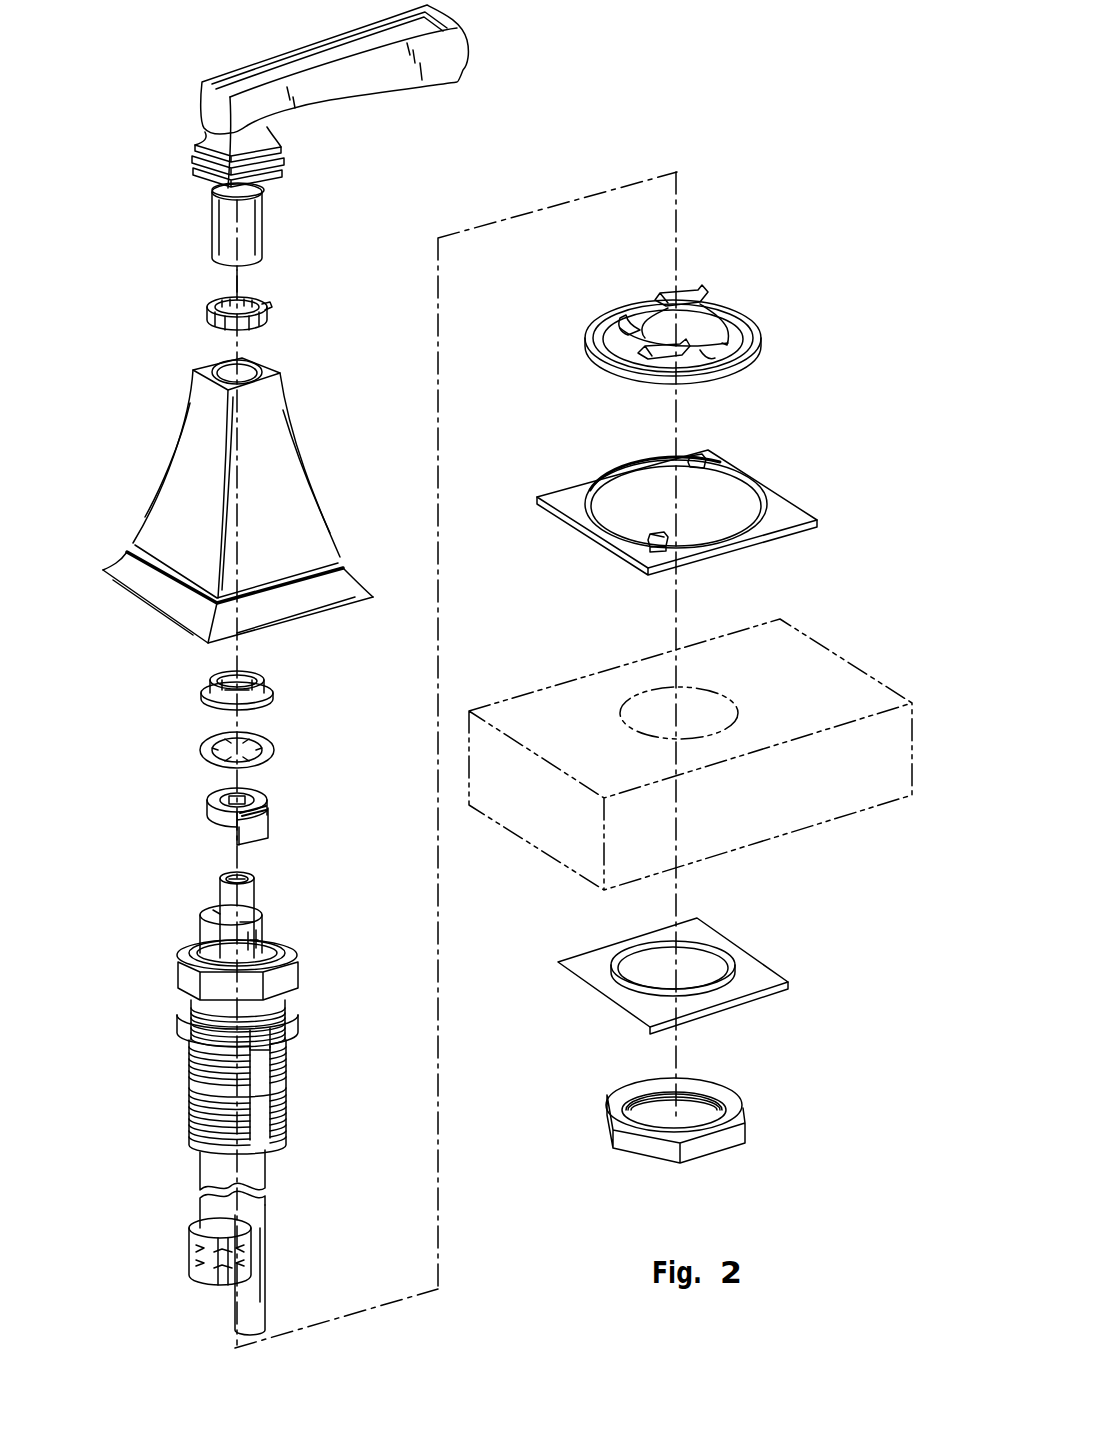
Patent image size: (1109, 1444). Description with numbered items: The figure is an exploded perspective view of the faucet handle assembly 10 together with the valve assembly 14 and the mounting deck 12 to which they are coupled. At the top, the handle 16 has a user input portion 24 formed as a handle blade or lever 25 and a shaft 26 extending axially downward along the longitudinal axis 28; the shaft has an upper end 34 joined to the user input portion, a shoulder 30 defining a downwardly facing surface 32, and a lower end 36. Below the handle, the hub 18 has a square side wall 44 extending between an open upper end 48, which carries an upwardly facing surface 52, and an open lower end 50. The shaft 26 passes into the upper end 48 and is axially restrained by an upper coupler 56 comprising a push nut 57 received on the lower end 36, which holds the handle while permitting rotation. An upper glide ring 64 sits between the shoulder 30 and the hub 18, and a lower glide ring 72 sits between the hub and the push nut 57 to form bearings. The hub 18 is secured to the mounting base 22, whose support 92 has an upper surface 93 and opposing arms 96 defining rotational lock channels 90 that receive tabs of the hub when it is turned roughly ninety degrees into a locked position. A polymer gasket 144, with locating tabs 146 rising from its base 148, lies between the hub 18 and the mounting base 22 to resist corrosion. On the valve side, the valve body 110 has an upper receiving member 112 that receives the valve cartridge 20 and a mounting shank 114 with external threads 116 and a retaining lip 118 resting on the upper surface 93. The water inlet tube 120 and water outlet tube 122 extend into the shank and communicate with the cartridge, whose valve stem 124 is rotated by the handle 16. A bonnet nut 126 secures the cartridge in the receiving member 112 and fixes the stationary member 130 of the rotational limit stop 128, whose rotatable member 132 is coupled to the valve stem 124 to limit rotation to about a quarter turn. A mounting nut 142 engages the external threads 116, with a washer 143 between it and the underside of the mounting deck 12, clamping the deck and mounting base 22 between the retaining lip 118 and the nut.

The faucet handle assembly 10 is at (743, 90).
The mounting deck 12 is at (798, 660).
The valve assembly 14 is at (233, 1137).
The handle 16 is at (324, 133).
The hub 18 is at (220, 514).
The valve cartridge 20 is at (234, 904).
The mounting base 22 is at (699, 677).
The user input portion 24 is at (362, 36).
The handle blade or lever 25 is at (470, 70).
The shaft 26 is at (212, 220).
The longitudinal axis 28 is at (235, 281).
The shoulder 30 is at (285, 163).
The downwardly facing surface 32 is at (200, 178).
The upper end 34 is at (188, 131).
The lower end 36 is at (282, 243).
The side wall 44 is at (275, 470).
The open upper end 48 is at (272, 360).
The open lower end 50 is at (142, 620).
The upwardly facing surface 52 is at (203, 367).
The upper coupler 56 is at (234, 732).
The push nut 57 is at (275, 750).
The upper glide ring 64 is at (288, 296).
The lower glide ring 72 is at (290, 678).
The rotational lock channels 90 is at (705, 312).
The support 92 is at (726, 322).
The upper surface 93 is at (635, 303).
The opposing arms 96 is at (685, 288).
The valve body 110 is at (290, 1060).
The upper receiving member 112 is at (290, 1014).
The mounting shank 114 is at (285, 1125).
The external threads 116 is at (183, 1098).
The retaining lip 118 is at (180, 1022).
The water inlet tube 120 is at (210, 1207).
The water outlet tube 122 is at (255, 1318).
The valve stem 124 is at (220, 898).
The bonnet nut 126 is at (188, 982).
The rotational limit stop 128 is at (232, 807).
The stationary member 130 is at (205, 930).
The rotatable member 132 is at (268, 833).
The mounting nut 142 is at (745, 1115).
The washer 143 is at (760, 946).
The gasket 144 is at (699, 500).
The locating tabs 146 is at (663, 537).
The base 148 is at (617, 553).